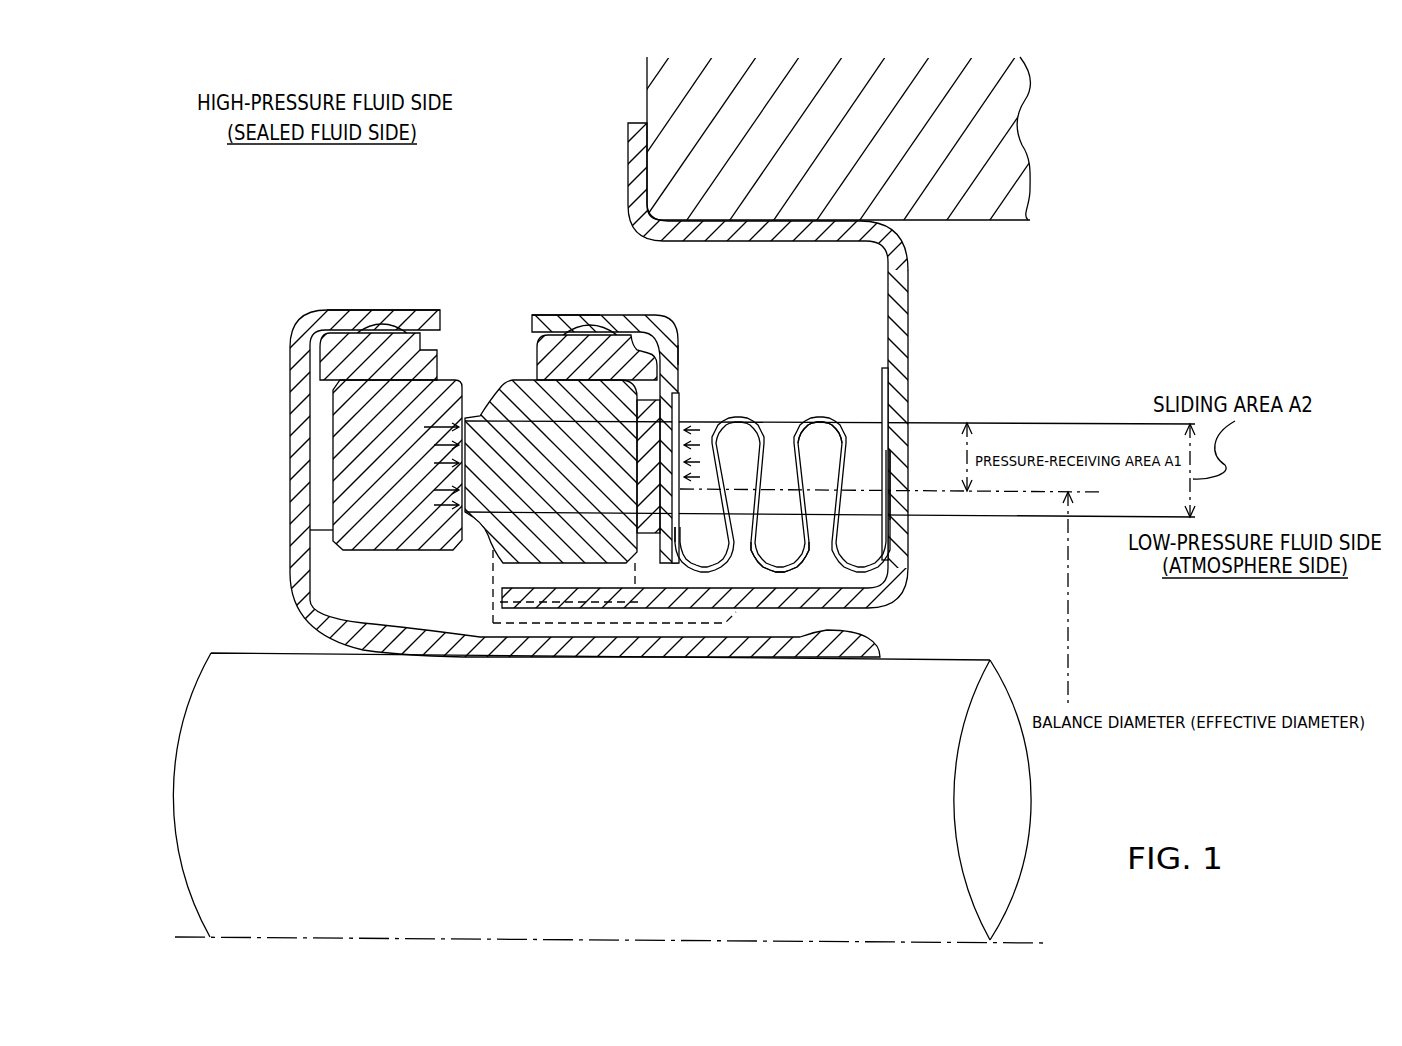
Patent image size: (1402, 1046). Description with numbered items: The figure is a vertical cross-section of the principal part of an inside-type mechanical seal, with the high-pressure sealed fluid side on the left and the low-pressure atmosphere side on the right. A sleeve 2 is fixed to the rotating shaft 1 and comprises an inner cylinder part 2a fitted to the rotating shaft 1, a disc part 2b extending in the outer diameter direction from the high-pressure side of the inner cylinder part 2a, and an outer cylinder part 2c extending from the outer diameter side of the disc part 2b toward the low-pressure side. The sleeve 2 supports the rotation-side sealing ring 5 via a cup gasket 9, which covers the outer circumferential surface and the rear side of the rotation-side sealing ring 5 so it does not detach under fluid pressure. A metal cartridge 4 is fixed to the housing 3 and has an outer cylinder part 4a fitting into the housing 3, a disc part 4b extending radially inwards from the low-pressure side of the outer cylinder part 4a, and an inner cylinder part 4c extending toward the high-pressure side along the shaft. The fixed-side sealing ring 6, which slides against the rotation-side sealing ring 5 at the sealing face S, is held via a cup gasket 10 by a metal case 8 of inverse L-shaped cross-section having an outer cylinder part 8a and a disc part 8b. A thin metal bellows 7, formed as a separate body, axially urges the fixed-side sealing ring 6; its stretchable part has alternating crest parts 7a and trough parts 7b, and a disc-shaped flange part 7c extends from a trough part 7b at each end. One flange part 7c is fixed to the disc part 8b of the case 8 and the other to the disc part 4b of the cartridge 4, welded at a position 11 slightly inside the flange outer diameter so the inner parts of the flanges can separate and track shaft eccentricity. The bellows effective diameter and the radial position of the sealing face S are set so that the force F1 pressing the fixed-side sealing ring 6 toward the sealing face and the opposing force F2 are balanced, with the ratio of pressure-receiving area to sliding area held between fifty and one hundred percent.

The rotating shaft 1 is at (566, 900).
The sleeve 2 is at (701, 395).
The inner cylinder part 2a is at (625, 646).
The disc part 2b is at (297, 470).
The outer cylinder part 2c is at (393, 325).
The housing 3 is at (685, 110).
The cartridge 4 is at (701, 375).
The outer cylinder part 4a is at (793, 243).
The disc part 4b is at (908, 400).
The inner cylinder part 4c is at (746, 597).
The rotation-side sealing ring 5 is at (465, 380).
The fixed-side sealing ring 6 is at (500, 378).
The metal bellows 7 is at (783, 519).
The crest parts 7a is at (821, 416).
The trough parts 7b is at (787, 571).
The flange part 7c is at (883, 413).
The case 8 is at (701, 350).
The outer cylinder part 8a is at (558, 315).
The disc part 8b is at (679, 358).
The cup gasket 9 is at (352, 310).
The cup gasket 10 is at (603, 355).
The position 11 is at (677, 390).
The sealing face S is at (470, 550).
The force F1 is at (710, 432).
The force F2 is at (428, 466).